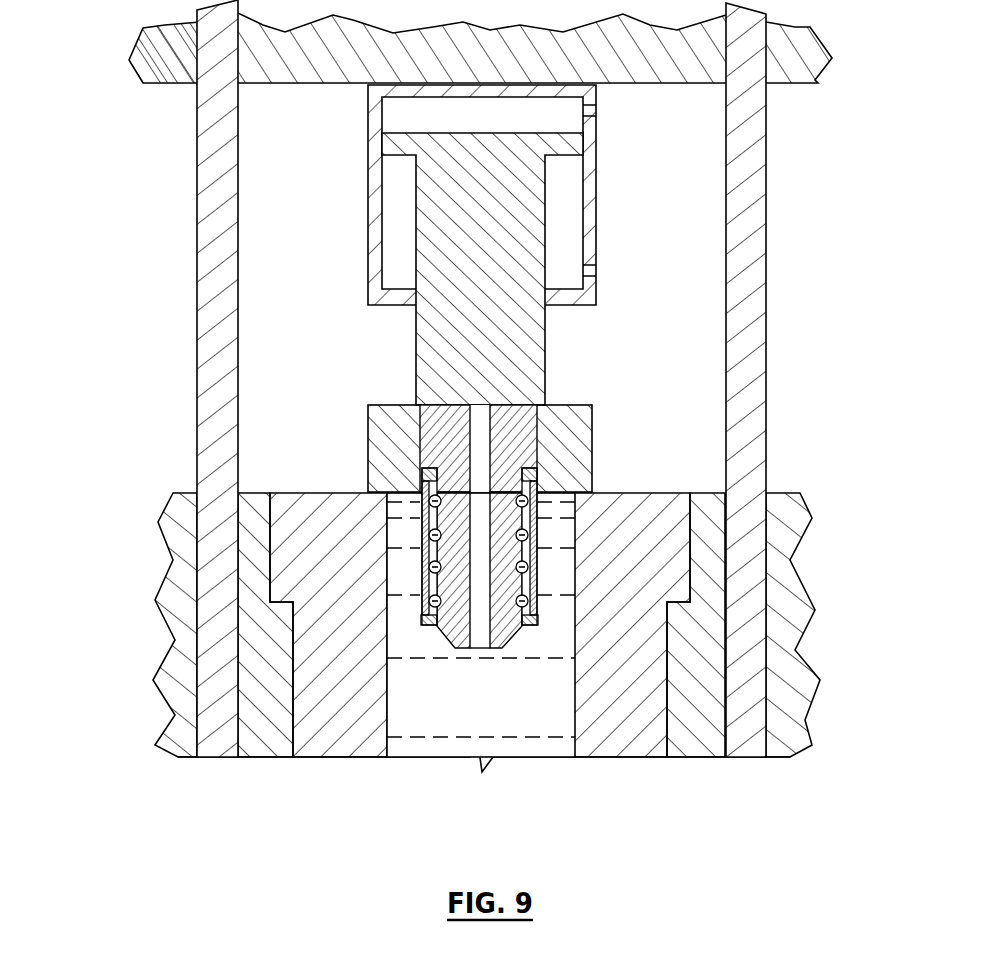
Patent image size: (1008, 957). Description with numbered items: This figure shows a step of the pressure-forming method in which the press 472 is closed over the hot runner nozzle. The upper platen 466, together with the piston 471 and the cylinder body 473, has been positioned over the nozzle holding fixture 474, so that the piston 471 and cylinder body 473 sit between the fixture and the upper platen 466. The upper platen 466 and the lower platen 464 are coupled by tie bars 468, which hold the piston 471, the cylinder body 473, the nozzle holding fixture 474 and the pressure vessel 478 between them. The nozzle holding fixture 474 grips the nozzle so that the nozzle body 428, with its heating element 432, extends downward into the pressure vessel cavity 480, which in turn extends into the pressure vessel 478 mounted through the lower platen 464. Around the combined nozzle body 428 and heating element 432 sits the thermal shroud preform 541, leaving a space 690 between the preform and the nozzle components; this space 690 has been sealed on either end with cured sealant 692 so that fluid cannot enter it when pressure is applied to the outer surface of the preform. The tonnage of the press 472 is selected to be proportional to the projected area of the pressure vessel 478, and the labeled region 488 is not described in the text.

The upper platen 466 is at (776, 72).
The piston 471 is at (523, 194).
The cylinder body 473 is at (585, 300).
The press 472 is at (117, 26).
The pressure vessel 478 is at (295, 578).
The tie bars 468 is at (747, 402).
The nozzle holding fixture 474 is at (563, 422).
The nozzle body 428 is at (450, 446).
The heating element 432 is at (430, 531).
The thermal shroud preform 541 is at (534, 529).
The space 690 is at (530, 582).
The sealant 692 is at (525, 625).
The lower platen 464 is at (783, 543).
The pressure vessel cavity 480 is at (570, 707).
The cavity 488 is at (460, 721).